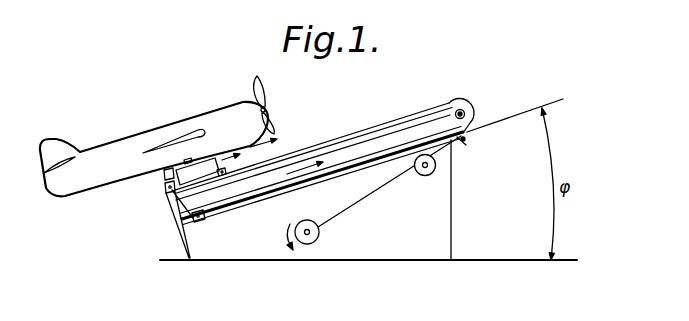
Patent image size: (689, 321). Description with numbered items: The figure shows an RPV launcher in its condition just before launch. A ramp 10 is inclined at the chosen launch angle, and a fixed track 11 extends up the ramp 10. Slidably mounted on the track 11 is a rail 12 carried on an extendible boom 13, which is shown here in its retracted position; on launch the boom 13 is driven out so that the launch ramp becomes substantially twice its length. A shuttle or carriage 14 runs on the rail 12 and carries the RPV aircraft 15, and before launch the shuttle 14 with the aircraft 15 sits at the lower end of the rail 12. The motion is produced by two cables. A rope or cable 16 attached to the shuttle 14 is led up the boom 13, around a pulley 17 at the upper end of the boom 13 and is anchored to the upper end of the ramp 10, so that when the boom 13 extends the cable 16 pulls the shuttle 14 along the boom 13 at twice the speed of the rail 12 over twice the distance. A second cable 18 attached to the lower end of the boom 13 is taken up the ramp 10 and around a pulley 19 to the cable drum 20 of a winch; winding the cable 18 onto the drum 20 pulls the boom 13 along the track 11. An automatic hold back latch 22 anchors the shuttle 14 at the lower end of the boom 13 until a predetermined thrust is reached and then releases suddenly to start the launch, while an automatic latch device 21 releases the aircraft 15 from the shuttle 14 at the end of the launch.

The ramp 10 is at (441, 219).
The fixed track 11 is at (386, 156).
The rail 12 is at (323, 146).
The extendible boom 13 is at (437, 124).
The shuttle 14 is at (185, 176).
The RPV aircraft 15 is at (173, 124).
The cable 16 is at (335, 139).
The pulley 17 is at (462, 103).
The second cable 18 is at (377, 196).
The upper roller 19 is at (436, 168).
The cable drum 20 is at (320, 233).
The automatic latch device 21 is at (188, 158).
The automatic hold back latch 22 is at (167, 193).